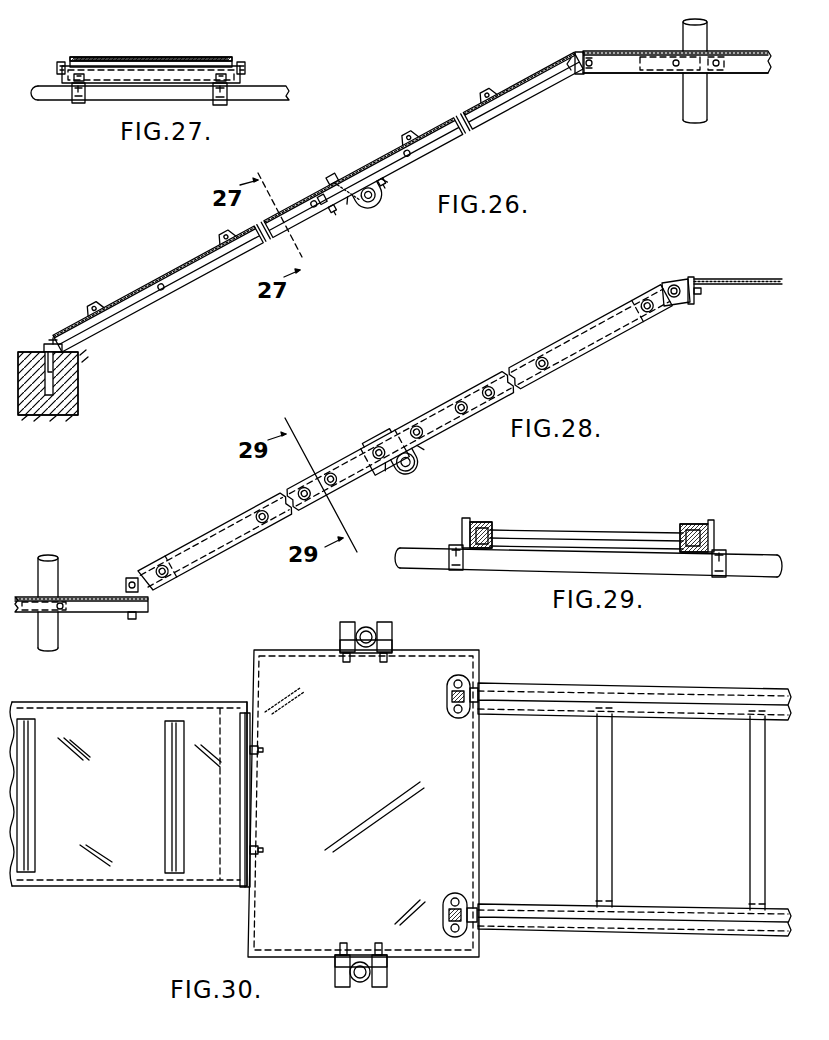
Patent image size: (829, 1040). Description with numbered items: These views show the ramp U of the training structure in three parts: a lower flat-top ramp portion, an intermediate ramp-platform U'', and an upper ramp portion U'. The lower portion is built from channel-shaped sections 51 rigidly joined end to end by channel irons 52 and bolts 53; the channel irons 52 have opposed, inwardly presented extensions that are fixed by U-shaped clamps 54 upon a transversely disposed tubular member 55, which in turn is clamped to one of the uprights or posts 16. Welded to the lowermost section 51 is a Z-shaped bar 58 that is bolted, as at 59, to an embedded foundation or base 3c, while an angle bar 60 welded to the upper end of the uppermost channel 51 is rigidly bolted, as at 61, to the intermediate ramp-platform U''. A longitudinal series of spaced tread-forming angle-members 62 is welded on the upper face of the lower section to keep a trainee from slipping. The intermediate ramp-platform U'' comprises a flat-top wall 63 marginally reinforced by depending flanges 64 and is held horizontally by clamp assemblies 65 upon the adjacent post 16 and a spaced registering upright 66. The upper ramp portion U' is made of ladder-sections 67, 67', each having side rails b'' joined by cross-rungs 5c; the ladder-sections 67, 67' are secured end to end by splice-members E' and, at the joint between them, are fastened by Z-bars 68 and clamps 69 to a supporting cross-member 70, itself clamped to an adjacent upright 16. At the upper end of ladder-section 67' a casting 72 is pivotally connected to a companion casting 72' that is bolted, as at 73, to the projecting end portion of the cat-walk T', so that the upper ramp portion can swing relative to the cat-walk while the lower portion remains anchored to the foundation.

In FIG. 27, the channel-shaped section 51 is at (176, 63).
In FIG. 26, the channel-shaped section 51 is at (175, 272).
In FIG. 30, the channel-shaped section 51 is at (114, 796).
In FIG. 27, the tread-forming angle-member 62 is at (136, 60).
In FIG. 26, the tread-forming angle-member 62 is at (106, 298).
In FIG. 30, the tread-forming angle-member 62 is at (168, 830).
In FIG. 27, the bolt 53 is at (58, 68).
In FIG. 26, the bolt 53 is at (345, 176).
In FIG. 27, the channel iron 52 is at (86, 76).
In FIG. 26, the channel iron 52 is at (324, 200).
In FIG. 27, the U-shaped clamp 54 is at (76, 104).
In FIG. 26, the U-shaped clamp 54 is at (378, 198).
In FIG. 27, the tubular member 55 is at (264, 102).
In FIG. 26, the tubular member 55 is at (370, 202).
In FIG. 26, the Z-shaped bar 58 is at (48, 340).
In FIG. 26, the bolted connection 59 is at (54, 372).
In FIG. 26, the base or embedded foundation 3c is at (70, 398).
In FIG. 26, the angle bar 60 is at (574, 74).
In FIG. 28, the angle bar 60 is at (132, 598).
In FIG. 30, the angle bar 60 is at (250, 798).
In FIG. 26, the bolted connection 61 is at (594, 66).
In FIG. 30, the bolted connection 61 is at (264, 750).
In FIG. 26, the flat-top wall 63 is at (660, 52).
In FIG. 28, the flat-top wall 63 is at (98, 612).
In FIG. 30, the flat-top wall 63 is at (363, 803).
In FIG. 26, the depending flange 64 is at (638, 70).
In FIG. 30, the depending flange 64 is at (254, 682).
In FIG. 26, the clamp assembly 65 is at (716, 72).
In FIG. 30, the clamp assembly 65 is at (368, 626).
In FIG. 26, the upright or post 16 is at (702, 106).
In FIG. 28, the upright or post 16 is at (46, 572).
In FIG. 30, the upright or post 16 is at (360, 628).
In FIG. 26, the ramp U is at (387, 129).
In FIG. 30, the ramp U is at (157, 696).
In FIG. 28, the upper ramp portion U' is at (559, 329).
In FIG. 30, the upper ramp portion U' is at (614, 668).
In FIG. 26, the intermediate ramp-platform U'' is at (610, 31).
In FIG. 28, the intermediate ramp-platform U'' is at (80, 584).
In FIG. 30, the intermediate ramp-platform U'' is at (290, 638).
In FIG. 28, the ladder-section 67 is at (405, 438).
In FIG. 28, the ladder-section 67' is at (517, 341).
In FIG. 28, the cross-rung 5c is at (260, 508).
In FIG. 29, the cross-rung 5c is at (590, 530).
In FIG. 30, the cross-rung 5c is at (610, 822).
In FIG. 28, the side rail b'' is at (422, 469).
In FIG. 29, the side rail b'' is at (588, 520).
In FIG. 30, the side rail b'' is at (634, 809).
In FIG. 28, the splice-member E' is at (345, 418).
In FIG. 28, the Z-bar 68 is at (402, 428).
In FIG. 29, the Z-bar 68 is at (462, 522).
In FIG. 28, the clamp 69 is at (416, 458).
In FIG. 29, the clamp 69 is at (456, 572).
In FIG. 28, the supporting cross-member 70 is at (412, 468).
In FIG. 29, the supporting cross-member 70 is at (552, 564).
In FIG. 28, the casting 72 is at (659, 280).
In FIG. 28, the companion casting 72' is at (678, 271).
In FIG. 28, the cat-walk T' is at (738, 264).
In FIG. 28, the bolted connection 73 is at (701, 293).
In FIG. 30, the registering upright 66 is at (360, 984).